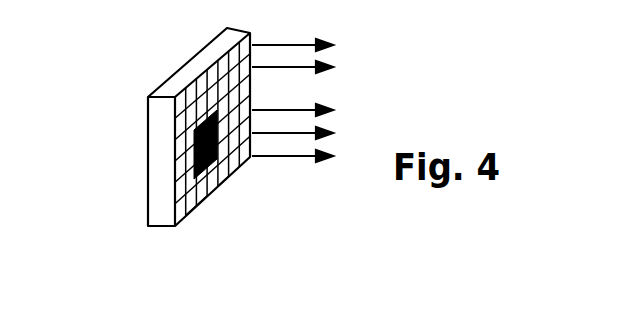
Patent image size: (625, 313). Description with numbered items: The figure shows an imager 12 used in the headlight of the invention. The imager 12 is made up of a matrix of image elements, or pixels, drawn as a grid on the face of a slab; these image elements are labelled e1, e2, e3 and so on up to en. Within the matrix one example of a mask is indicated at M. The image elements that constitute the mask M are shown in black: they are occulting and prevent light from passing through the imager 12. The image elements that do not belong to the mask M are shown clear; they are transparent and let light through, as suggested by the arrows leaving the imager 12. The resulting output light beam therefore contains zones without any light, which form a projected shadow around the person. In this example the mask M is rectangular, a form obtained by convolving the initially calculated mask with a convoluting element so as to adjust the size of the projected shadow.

The imager 12 is at (158, 141).
The image element en is at (183, 94).
The mask M is at (192, 177).
The image element e1 is at (194, 211).
The image element e2 is at (204, 200).
The image element e3 is at (224, 181).